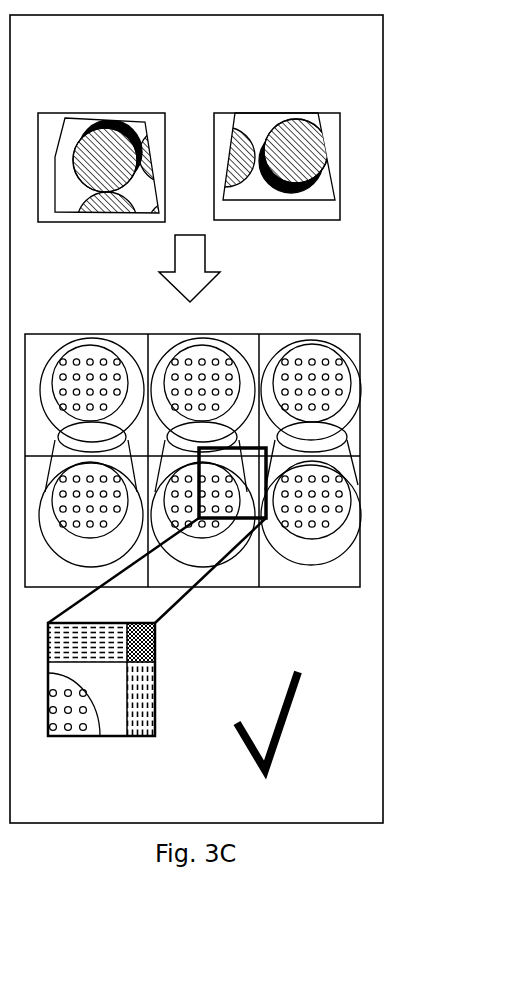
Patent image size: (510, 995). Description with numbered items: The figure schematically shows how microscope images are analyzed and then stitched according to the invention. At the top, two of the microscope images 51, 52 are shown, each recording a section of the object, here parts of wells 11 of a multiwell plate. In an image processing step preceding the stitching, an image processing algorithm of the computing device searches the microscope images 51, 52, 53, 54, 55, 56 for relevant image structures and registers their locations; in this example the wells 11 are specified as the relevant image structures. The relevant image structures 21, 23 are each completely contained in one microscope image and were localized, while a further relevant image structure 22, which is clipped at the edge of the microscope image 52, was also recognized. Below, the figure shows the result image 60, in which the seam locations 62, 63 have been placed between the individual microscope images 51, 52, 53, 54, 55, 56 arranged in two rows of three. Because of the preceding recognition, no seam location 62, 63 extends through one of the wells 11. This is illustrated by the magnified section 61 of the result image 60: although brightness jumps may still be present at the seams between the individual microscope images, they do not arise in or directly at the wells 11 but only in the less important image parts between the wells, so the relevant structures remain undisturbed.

The well 11 is at (58, 733).
The relevant image structure 21 is at (100, 157).
The relevant image structure 22 is at (240, 130).
The relevant image structure 23 is at (298, 157).
The microscope image 51 is at (117, 260).
The microscope image 52 is at (245, 263).
The microscope image 53 is at (348, 333).
The microscope image 54 is at (27, 590).
The microscope image 55 is at (230, 590).
The microscope image 56 is at (360, 570).
The result image 60 is at (70, 330).
The magnified section 61 is at (147, 740).
The seam location 62 is at (350, 453).
The seam location 63 is at (282, 590).